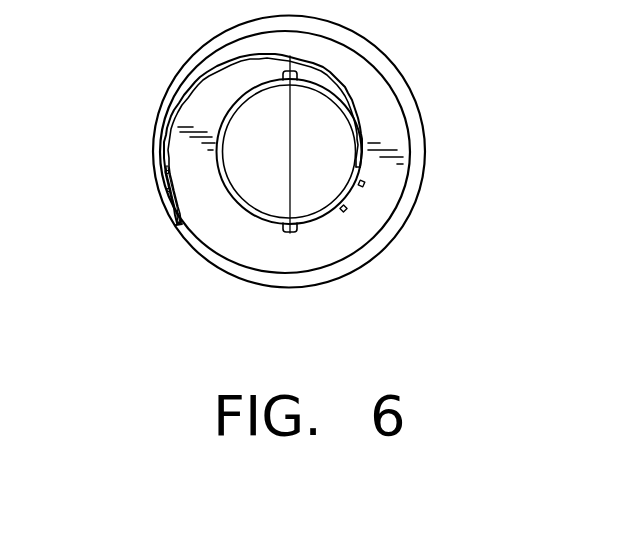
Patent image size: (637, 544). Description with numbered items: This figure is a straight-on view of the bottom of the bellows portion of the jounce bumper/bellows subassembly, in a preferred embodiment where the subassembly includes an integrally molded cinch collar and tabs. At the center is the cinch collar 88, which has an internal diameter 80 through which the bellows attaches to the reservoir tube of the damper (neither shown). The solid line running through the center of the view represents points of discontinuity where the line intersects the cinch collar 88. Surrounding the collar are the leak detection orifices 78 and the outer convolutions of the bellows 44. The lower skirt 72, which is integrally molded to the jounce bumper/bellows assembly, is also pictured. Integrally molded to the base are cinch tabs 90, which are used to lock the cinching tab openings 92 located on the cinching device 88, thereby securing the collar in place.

The bellows 44 is at (190, 60).
The lower skirt 72 is at (382, 90).
The leak detection orifices 78 is at (292, 233).
The internal diameter 80 is at (357, 168).
The cinch collar 88 is at (347, 209).
The cinch tabs 90 is at (176, 225).
The cinching tab openings 92 is at (165, 170).